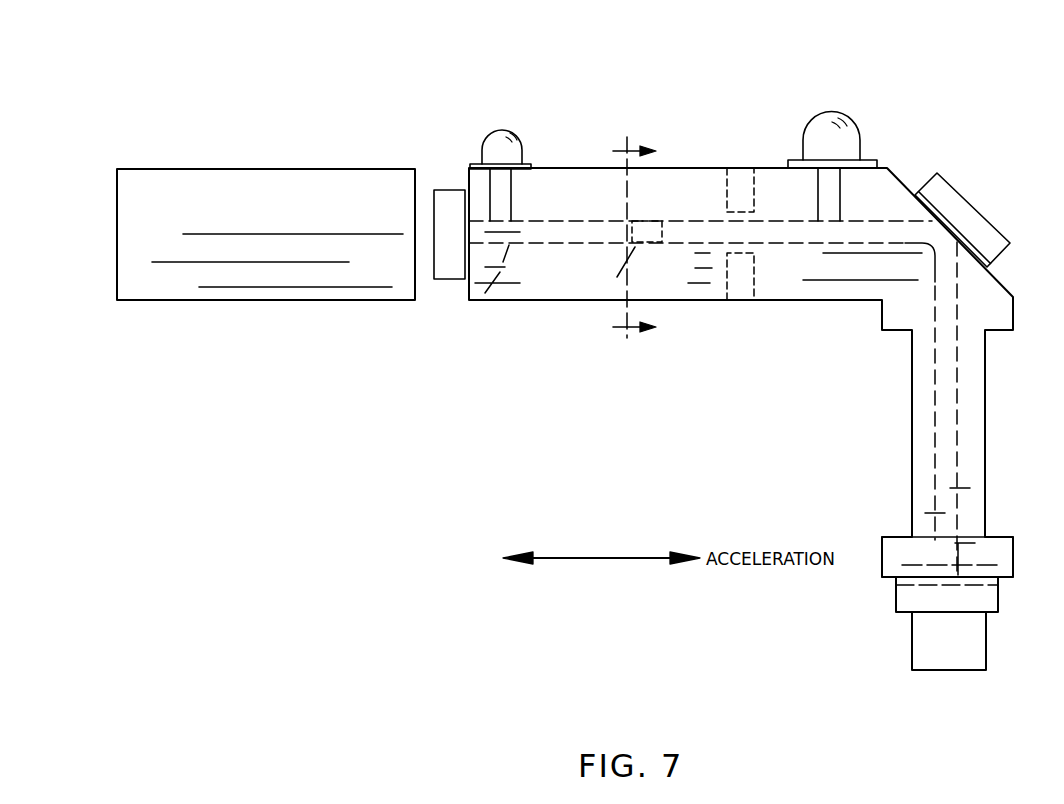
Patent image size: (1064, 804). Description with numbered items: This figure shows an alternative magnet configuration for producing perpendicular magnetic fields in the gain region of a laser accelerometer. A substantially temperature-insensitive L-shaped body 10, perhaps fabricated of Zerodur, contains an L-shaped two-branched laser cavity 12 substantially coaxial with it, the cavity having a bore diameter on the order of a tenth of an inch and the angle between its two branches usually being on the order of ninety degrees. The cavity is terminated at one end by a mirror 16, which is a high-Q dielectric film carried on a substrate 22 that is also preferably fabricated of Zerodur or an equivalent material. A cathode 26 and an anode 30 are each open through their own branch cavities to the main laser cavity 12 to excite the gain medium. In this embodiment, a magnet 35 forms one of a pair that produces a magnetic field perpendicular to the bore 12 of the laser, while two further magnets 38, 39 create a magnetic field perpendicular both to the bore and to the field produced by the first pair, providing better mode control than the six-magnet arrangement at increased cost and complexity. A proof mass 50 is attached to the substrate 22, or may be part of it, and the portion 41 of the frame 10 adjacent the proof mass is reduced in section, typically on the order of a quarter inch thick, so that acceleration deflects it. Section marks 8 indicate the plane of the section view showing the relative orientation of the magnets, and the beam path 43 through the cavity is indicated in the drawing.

The section line 8- 8 is at (679, 163).
The L-shaped body 10 is at (957, 146).
The laser cavity 12 is at (475, 310).
The mirror 16 is at (910, 583).
The substrate 22 is at (990, 596).
The cathode 26 is at (833, 112).
The anode 30 is at (485, 137).
The magnet 35 is at (605, 292).
The magnet 38 is at (750, 133).
The magnet 39 is at (740, 300).
The portion of the frame 41 is at (985, 405).
The light beam path 43 is at (873, 288).
The proof mass 50 is at (960, 649).